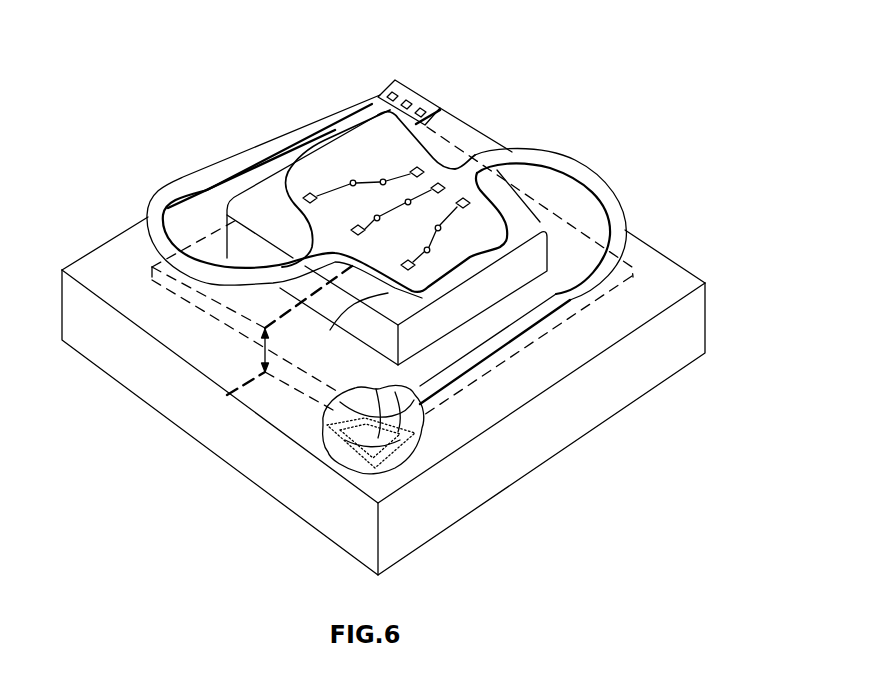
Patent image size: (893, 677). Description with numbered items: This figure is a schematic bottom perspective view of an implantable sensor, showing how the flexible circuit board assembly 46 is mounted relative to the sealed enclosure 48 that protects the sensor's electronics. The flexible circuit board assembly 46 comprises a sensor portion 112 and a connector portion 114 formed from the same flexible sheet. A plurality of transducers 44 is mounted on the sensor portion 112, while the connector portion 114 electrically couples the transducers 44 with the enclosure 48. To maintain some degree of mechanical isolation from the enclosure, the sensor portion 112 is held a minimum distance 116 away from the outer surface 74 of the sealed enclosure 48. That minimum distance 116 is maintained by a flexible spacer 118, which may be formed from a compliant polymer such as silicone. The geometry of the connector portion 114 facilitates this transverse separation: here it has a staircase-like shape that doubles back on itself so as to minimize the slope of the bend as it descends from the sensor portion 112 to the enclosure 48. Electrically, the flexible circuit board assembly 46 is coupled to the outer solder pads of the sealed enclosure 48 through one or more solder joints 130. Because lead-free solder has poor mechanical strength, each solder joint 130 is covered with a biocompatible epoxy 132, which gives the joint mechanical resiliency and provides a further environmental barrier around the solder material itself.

The transducers 44 is at (342, 158).
The flexible circuit board assembly 46 is at (574, 163).
The sealed enclosure 48 is at (684, 263).
The outer surface 74 is at (633, 238).
The sensor portion 112 is at (374, 160).
The connector portion 114 is at (180, 175).
The minimum distance 116 is at (264, 352).
The flexible spacer 118 is at (330, 330).
The solder joints 130 is at (415, 98).
The biocompatible epoxy 132 is at (338, 462).